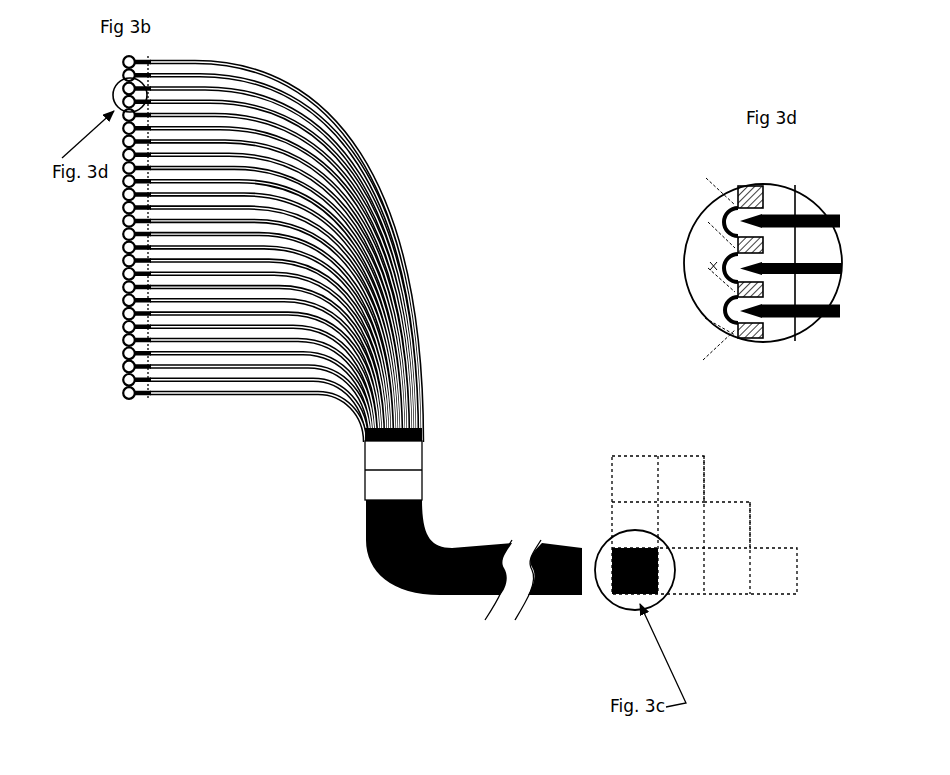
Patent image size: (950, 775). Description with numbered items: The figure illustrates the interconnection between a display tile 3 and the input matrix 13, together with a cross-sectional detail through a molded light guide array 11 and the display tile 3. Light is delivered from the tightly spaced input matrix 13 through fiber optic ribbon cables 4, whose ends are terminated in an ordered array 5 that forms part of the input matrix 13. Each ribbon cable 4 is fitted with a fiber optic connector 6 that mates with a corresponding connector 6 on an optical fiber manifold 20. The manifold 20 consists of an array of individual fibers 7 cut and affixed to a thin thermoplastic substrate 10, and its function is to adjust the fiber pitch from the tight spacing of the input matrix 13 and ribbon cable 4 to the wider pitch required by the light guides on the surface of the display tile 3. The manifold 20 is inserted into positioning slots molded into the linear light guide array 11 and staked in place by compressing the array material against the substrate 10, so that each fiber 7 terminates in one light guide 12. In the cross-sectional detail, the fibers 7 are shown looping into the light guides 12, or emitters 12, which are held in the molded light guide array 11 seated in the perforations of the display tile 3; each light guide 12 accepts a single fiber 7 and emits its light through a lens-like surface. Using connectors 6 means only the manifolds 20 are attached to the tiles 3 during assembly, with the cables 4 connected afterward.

In FIG. 3B, the display tile 3 is at (129, 400).
In FIG. 3D, the display tile 3 is at (740, 186).
In FIG. 3B, the fiber optic ribbon cable 4 is at (394, 590).
In FIG. 3B, the ordered array 5 is at (553, 600).
In FIG. 3B, the fiber optic connector 6 is at (430, 476).
In FIG. 3B, the optical fiber 7 is at (330, 124).
In FIG. 3D, the optical fiber 7 is at (828, 277).
In FIG. 3B, the thin substrate 10 is at (256, 90).
In FIG. 3D, the thin substrate 10 is at (812, 242).
In FIG. 3B, the molded light guide array 11 is at (145, 400).
In FIG. 3D, the molded light guide array 11 is at (786, 348).
In FIG. 3B, the light guide 12 is at (122, 390).
In FIG. 3D, the light guide 12 is at (741, 326).
In FIG. 3B, the input matrix 13 is at (775, 596).
In FIG. 3B, the optical fiber manifold 20 is at (394, 210).